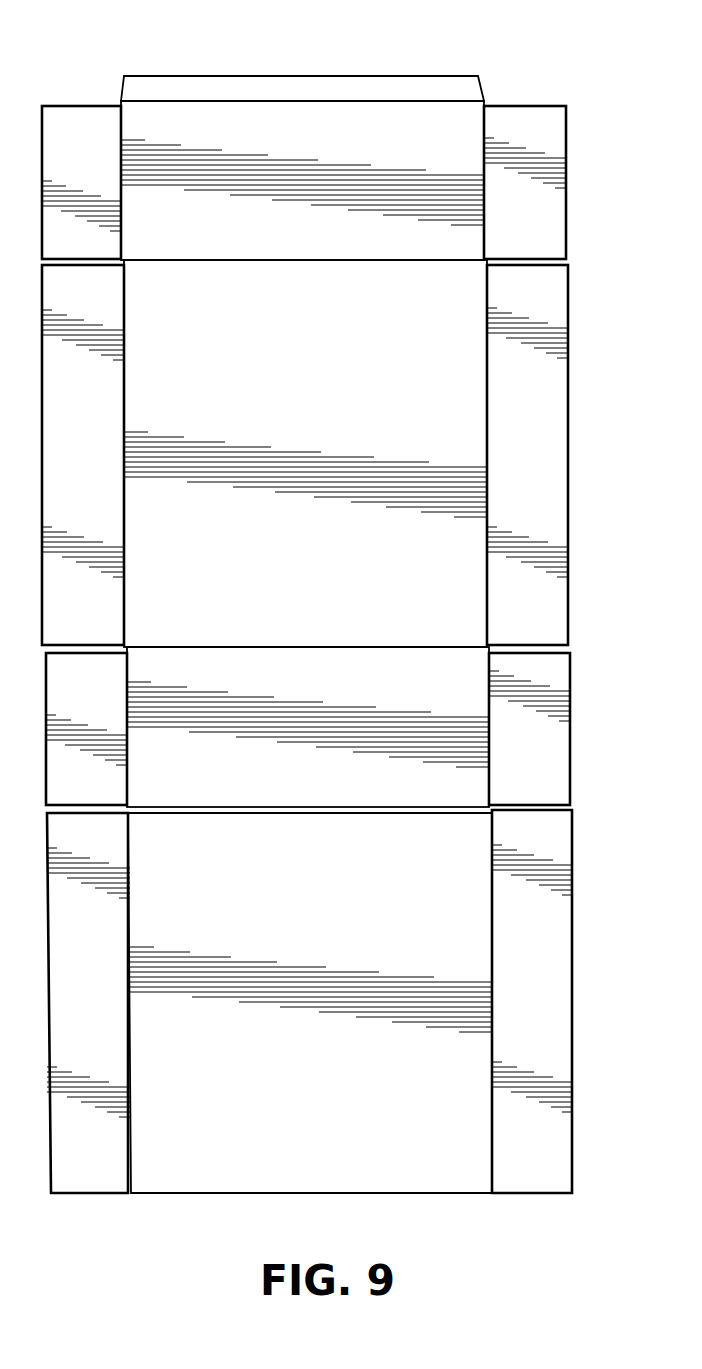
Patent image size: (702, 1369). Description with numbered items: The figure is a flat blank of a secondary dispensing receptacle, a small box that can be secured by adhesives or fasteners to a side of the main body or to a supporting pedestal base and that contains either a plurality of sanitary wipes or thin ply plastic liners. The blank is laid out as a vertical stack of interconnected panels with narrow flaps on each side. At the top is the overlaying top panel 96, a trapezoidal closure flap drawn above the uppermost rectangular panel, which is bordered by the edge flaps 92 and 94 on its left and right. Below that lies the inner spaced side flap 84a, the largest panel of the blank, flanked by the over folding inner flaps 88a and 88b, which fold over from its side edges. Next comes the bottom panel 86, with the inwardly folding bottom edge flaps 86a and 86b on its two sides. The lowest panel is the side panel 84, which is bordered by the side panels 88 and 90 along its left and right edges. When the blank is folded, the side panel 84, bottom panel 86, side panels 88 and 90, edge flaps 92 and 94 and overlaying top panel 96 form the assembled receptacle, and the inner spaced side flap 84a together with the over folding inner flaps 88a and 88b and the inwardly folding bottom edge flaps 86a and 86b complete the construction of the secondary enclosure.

The side panel 84 is at (307, 1065).
The inner spaced side flap 84a is at (310, 386).
The bottom panel 86 is at (304, 777).
The inwardly folding bottom edge flap 86a is at (105, 694).
The inwardly folding bottom edge flap 86b is at (553, 761).
The side panel 88 is at (97, 967).
The over folding inner flap 88a is at (105, 429).
The over folding inner flap 88b is at (553, 429).
The side panel 90 is at (544, 959).
The edge flap 92 is at (97, 148).
The edge flap 94 is at (543, 148).
The overlaying top panel 96 is at (350, 74).